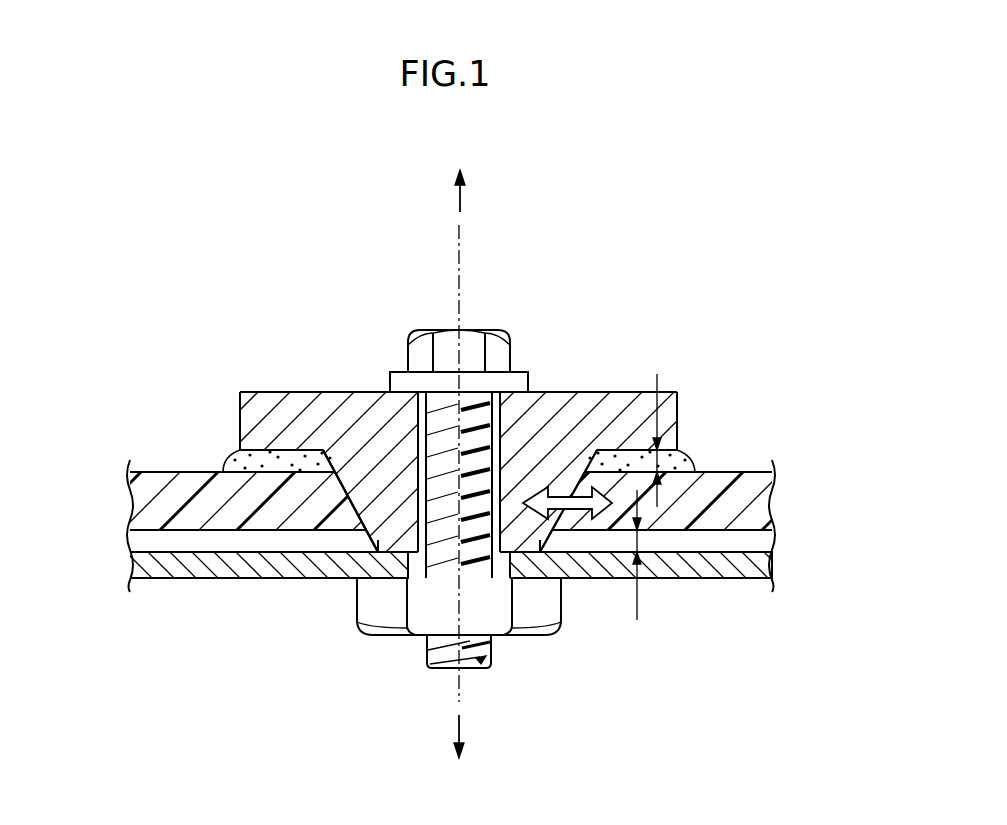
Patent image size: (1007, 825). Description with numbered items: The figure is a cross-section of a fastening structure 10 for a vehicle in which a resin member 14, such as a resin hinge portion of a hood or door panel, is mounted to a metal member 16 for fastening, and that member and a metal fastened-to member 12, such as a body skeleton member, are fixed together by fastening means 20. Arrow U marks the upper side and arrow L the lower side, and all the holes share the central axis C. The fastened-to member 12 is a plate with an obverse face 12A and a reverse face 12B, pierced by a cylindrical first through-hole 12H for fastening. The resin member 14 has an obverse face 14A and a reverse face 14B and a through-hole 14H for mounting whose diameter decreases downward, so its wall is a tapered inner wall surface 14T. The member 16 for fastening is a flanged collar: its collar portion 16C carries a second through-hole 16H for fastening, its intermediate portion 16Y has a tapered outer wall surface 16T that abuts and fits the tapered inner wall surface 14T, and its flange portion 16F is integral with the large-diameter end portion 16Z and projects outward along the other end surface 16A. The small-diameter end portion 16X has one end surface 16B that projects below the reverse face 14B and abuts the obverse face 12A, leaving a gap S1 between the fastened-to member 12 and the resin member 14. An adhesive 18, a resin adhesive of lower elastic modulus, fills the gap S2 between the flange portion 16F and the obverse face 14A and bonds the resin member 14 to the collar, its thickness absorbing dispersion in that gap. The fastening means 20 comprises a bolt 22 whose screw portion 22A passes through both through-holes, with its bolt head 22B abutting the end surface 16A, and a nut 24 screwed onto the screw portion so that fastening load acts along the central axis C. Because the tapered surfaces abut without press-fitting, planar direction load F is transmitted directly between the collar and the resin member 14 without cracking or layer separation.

The fastening structure 10 is at (379, 330).
The fastened-to member 12 is at (470, 572).
The obverse face 12A is at (740, 543).
The reverse face 12B is at (747, 580).
The first through-hole for fastening 12H is at (416, 566).
The resin member 14 is at (457, 450).
The obverse face 14A is at (157, 472).
The reverse face 14B is at (130, 542).
The through-hole for mounting 14H is at (578, 440).
The tapered inner wall surface 14T is at (344, 470).
The member for fastening 16 is at (463, 441).
The other end surface 16A is at (616, 425).
The one end surface 16B is at (527, 556).
The collar portion 16C is at (363, 502).
The flange portion 16F is at (278, 412).
The second through-hole for fastening 16H is at (494, 406).
The tapered outer wall surface 16T is at (339, 489).
The end portion at the small-diameter side 16X is at (538, 538).
The intermediate portion 16Y is at (563, 480).
The end portion at the large-diameter side 16Z is at (557, 462).
The adhesive 18 is at (227, 452).
The fastening means 20 is at (487, 513).
The bolt 22 is at (470, 512).
The screw portion 22A is at (425, 665).
The bolt head 22B is at (470, 343).
The nut 24 is at (498, 618).
The central axis C is at (460, 247).
The planar direction load F is at (576, 503).
The gap S1 is at (636, 580).
The gap S2 is at (656, 426).
The arrow U is at (460, 177).
The arrow L is at (460, 751).